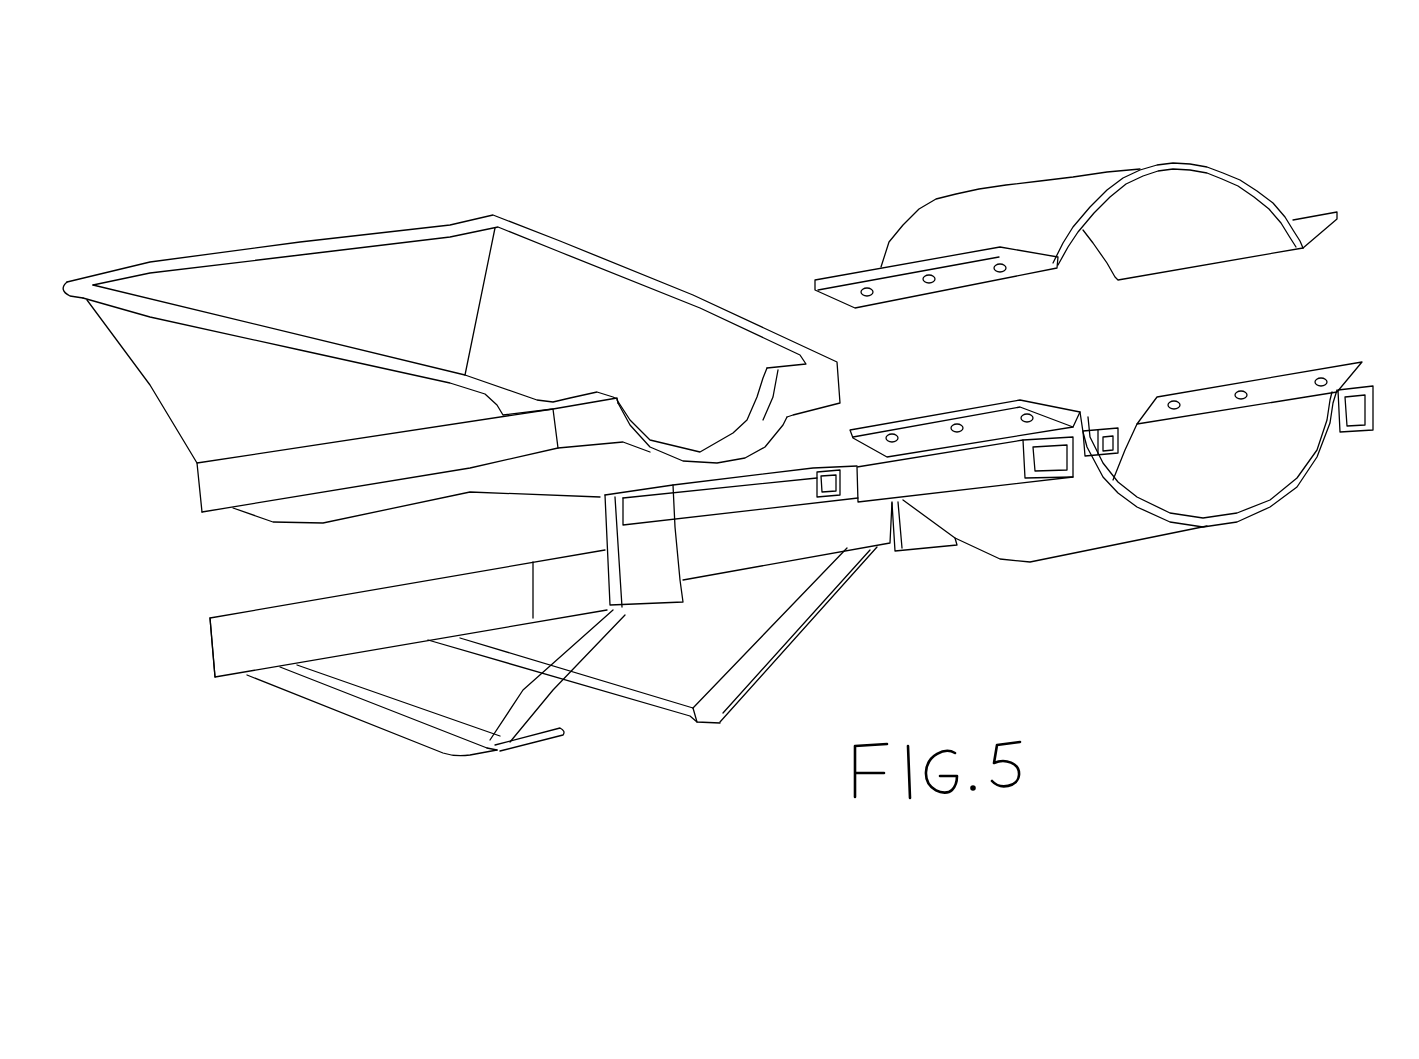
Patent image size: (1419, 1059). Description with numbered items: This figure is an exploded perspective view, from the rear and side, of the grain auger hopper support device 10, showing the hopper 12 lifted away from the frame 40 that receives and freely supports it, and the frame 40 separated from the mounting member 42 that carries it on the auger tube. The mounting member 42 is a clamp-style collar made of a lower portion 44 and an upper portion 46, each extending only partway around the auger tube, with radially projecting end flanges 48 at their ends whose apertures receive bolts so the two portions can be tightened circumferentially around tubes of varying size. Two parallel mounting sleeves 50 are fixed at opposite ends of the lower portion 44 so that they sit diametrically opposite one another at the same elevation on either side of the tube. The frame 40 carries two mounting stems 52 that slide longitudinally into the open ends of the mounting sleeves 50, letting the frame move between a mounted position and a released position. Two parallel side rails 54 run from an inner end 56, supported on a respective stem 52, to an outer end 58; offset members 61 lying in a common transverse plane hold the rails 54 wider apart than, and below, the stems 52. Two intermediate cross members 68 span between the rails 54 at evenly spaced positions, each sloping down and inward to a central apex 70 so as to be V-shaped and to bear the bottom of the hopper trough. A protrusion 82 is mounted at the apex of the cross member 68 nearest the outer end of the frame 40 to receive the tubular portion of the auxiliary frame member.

The grain auger hopper support device 10 is at (838, 156).
The hopper 12 is at (342, 208).
The frame 40 is at (598, 788).
The mounting member 42 is at (1136, 622).
The lower portion 44 is at (1177, 537).
The upper portion 46 is at (1140, 167).
The end flanges 48 is at (956, 259).
The mounting sleeves 50 is at (1003, 478).
The mounting stems 52 is at (745, 503).
The side rails 54 is at (413, 595).
The inner end 56 is at (533, 588).
The outer end 58 is at (208, 642).
The offset members 61 is at (593, 577).
The intermediate cross members 68 is at (393, 720).
The central apex 70 is at (480, 752).
The protrusion 82 is at (547, 740).